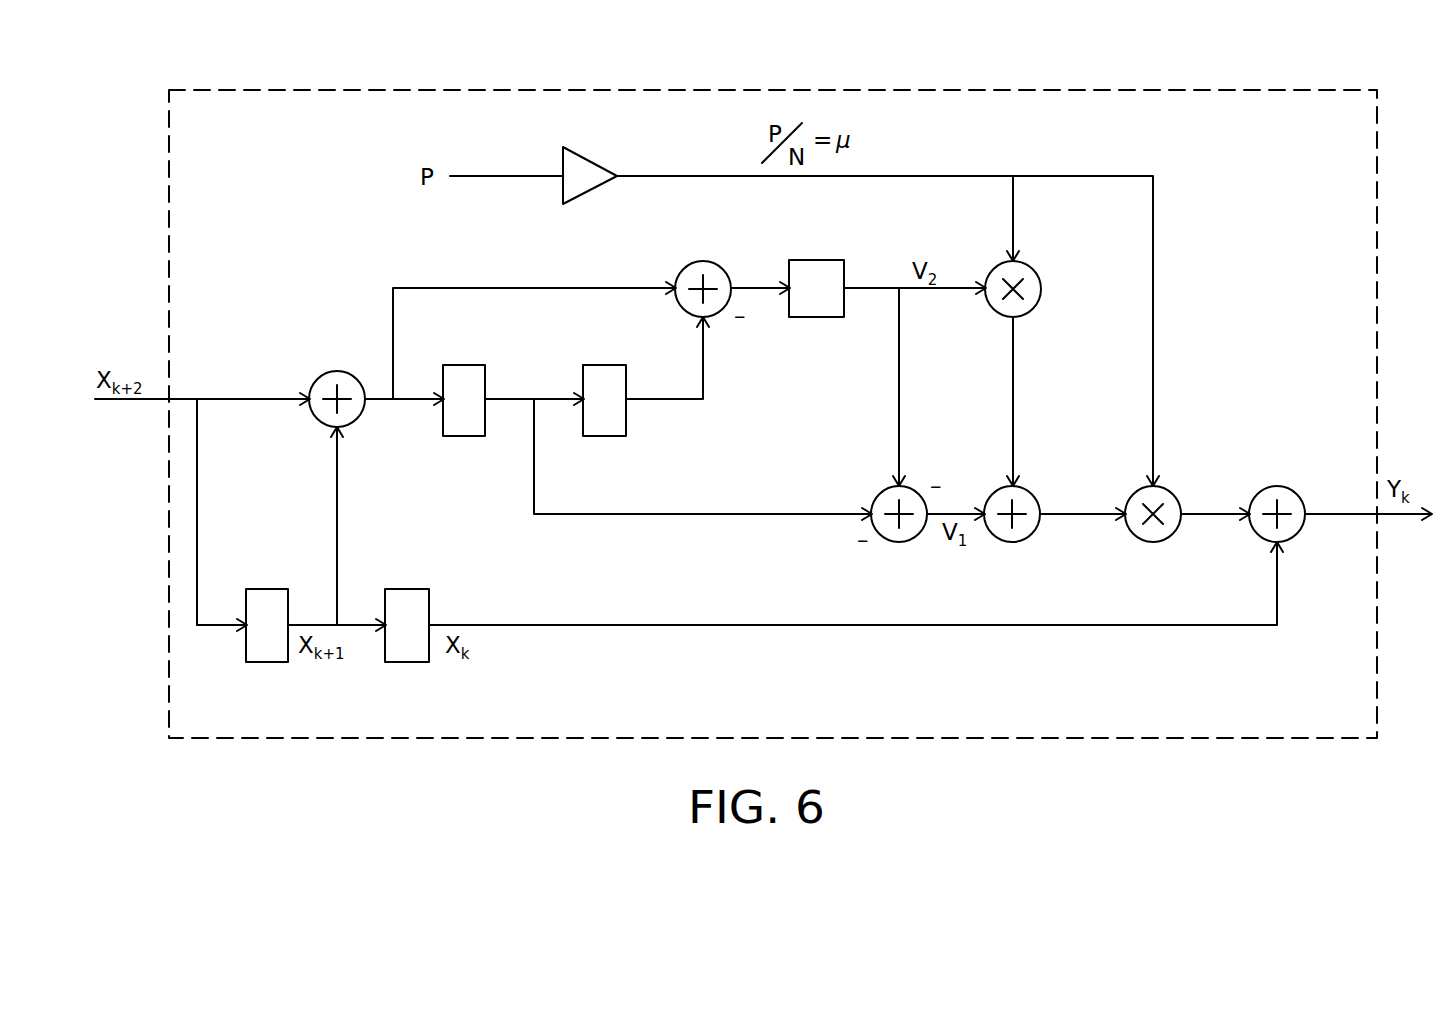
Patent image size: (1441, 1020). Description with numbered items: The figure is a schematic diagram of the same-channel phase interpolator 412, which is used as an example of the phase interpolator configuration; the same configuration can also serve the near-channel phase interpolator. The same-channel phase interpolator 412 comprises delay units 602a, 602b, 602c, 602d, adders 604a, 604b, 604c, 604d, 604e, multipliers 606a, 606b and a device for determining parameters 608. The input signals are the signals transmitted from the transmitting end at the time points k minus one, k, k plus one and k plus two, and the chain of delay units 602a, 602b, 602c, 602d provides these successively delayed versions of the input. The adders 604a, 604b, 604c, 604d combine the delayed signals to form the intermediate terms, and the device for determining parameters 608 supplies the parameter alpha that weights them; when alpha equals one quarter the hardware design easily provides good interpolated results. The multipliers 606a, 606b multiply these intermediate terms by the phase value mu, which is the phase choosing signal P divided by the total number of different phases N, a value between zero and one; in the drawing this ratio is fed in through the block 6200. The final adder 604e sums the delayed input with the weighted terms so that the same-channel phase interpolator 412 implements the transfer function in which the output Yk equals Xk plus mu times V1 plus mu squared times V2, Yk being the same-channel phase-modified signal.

The same-channel phase interpolator 412 is at (1268, 90).
The amplifier 6200 is at (597, 158).
The delay unit 602a is at (267, 662).
The delay unit 602b is at (407, 662).
The delay unit 602c is at (465, 365).
The delay unit 602d is at (603, 437).
The adder 604a is at (337, 371).
The adder 604b is at (706, 261).
The adder 604c is at (899, 542).
The adder 604d is at (1012, 542).
The adder 604e is at (1277, 486).
The multiplier 606a is at (1033, 269).
The multiplier 606b is at (1153, 542).
The device for determining parameters 608 is at (817, 260).